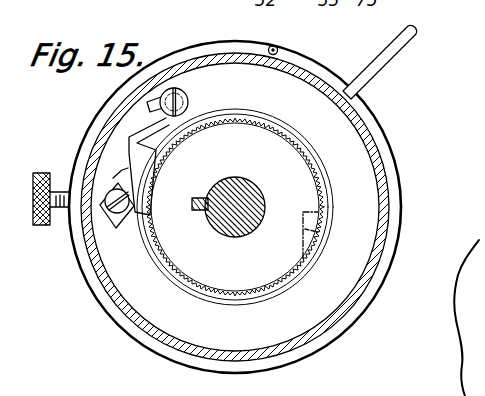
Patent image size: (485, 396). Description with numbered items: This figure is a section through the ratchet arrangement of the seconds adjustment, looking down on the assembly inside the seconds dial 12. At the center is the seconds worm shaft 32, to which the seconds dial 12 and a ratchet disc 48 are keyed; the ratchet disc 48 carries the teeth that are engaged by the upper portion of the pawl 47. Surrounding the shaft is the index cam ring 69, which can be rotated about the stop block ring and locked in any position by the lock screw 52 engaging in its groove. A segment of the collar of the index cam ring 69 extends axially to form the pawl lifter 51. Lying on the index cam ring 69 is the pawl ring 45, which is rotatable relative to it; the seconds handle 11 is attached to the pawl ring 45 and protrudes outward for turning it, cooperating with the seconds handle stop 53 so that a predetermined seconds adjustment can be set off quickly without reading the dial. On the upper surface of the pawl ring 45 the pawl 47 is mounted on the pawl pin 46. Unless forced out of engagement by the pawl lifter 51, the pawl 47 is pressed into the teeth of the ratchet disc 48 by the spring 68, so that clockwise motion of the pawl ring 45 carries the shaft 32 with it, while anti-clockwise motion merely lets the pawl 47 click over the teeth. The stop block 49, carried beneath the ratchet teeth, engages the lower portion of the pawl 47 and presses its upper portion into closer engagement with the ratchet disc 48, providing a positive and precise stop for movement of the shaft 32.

The seconds handle 11 is at (391, 52).
The seconds dial 12 is at (118, 305).
The seconds worm shaft 32 is at (245, 231).
The pawl ring 45 is at (123, 267).
The pawl pin 46 is at (123, 214).
The pawl 47 is at (121, 183).
The ratchet disc 48 is at (284, 264).
The stop block 49 is at (321, 233).
The pawl lifter 51 is at (158, 261).
The lock screw 52 is at (34, 203).
The seconds handle stop 53 is at (279, 46).
The spring 68 is at (126, 128).
The index cam ring 69 is at (399, 190).